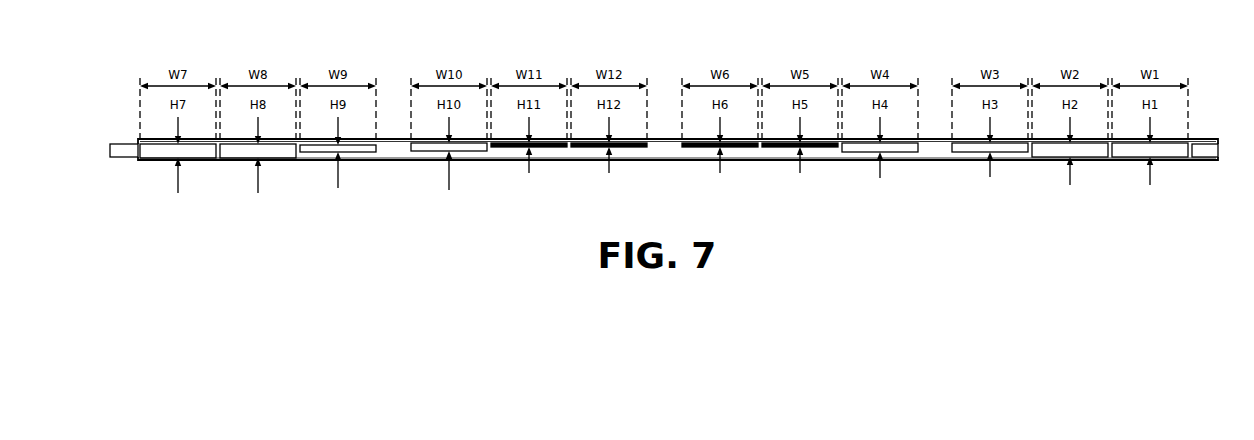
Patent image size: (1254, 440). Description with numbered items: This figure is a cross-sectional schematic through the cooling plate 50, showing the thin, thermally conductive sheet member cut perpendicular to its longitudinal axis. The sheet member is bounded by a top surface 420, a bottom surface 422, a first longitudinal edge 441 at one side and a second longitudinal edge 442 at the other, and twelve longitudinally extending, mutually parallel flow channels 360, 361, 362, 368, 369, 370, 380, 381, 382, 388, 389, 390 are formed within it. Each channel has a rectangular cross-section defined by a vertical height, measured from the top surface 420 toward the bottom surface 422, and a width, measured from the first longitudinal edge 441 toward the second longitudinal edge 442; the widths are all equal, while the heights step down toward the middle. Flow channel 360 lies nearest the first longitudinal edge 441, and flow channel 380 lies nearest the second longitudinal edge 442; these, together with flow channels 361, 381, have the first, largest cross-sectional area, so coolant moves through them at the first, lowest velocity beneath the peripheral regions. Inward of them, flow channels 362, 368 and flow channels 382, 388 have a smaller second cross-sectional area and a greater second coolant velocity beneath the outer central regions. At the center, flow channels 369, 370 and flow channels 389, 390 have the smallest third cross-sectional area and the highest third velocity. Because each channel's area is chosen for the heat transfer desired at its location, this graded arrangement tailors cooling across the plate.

The assembly 50 is at (774, 44).
The top surface 420 is at (140, 139).
The bottom surface 422 is at (142, 160).
The first longitudinal edge 441 is at (1218, 160).
The second longitudinal edge 442 is at (110, 150).
The flow channel 360 is at (1133, 151).
The flow channel 361 is at (1053, 151).
The flow channel 362 is at (971, 149).
The flow channel 368 is at (863, 149).
The flow channel 369 is at (783, 146).
The flow channel 370 is at (701, 146).
The flow channel 380 is at (162, 152).
The flow channel 381 is at (244, 152).
The flow channel 382 is at (324, 149).
The flow channel 388 is at (430, 148).
The flow channel 389 is at (510, 146).
The flow channel 390 is at (592, 146).